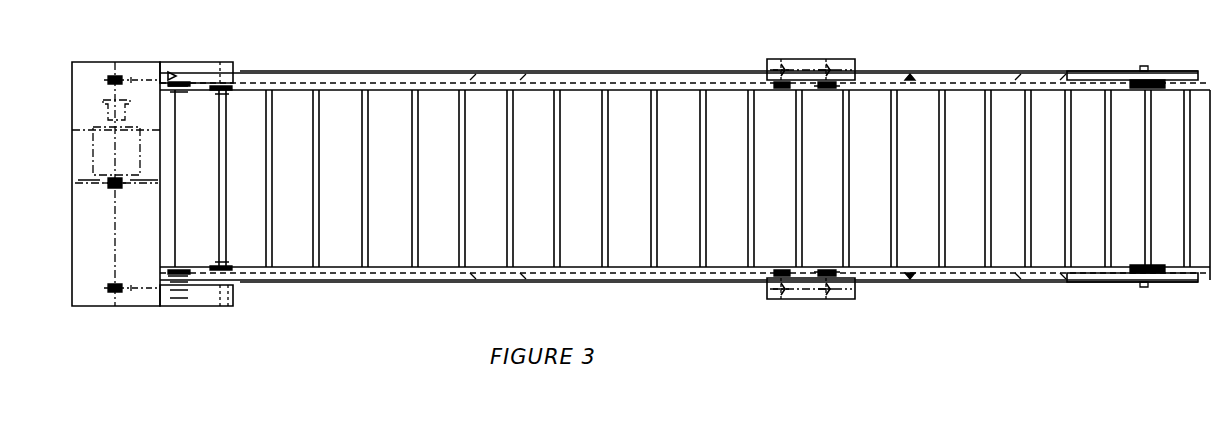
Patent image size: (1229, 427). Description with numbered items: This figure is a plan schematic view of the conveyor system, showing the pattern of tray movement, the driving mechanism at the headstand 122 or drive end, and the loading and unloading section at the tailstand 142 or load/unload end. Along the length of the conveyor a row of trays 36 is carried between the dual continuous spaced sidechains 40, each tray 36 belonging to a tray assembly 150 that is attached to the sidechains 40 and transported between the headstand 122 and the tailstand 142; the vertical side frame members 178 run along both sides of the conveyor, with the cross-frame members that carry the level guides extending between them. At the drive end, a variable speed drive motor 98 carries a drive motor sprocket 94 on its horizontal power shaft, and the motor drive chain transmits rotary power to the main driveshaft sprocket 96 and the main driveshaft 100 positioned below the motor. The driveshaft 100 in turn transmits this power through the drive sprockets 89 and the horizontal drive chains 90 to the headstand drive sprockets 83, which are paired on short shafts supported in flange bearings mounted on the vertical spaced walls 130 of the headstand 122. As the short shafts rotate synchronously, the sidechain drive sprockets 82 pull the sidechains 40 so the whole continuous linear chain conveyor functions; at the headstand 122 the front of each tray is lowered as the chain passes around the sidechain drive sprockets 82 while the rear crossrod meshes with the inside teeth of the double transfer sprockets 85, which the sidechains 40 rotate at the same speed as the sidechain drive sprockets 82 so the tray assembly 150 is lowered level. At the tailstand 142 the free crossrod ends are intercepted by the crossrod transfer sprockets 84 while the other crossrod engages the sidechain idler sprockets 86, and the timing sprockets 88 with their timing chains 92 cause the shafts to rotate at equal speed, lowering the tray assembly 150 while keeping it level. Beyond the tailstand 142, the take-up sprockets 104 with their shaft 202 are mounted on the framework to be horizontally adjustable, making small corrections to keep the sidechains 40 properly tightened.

The tray 36 is at (161, 175).
The dual continuous spaced sidechains 40 is at (426, 75).
The sidechain drive sprockets 82 is at (178, 93).
The headstand drive sprockets 83 is at (186, 72).
The crossrod transfer sprockets 84 is at (828, 90).
The double transfer sprockets 85 is at (214, 90).
The sidechain idler sprockets 86 is at (780, 90).
The timing sprockets 88 is at (780, 64).
The drive sprockets 89 is at (110, 72).
The horizontal drive chains 90 is at (131, 76).
The timing chains 92 is at (800, 70).
The drive motor sprocket 94 is at (122, 192).
The main driveshaft sprocket 96 is at (88, 186).
The variable speed drive motor 98 is at (93, 157).
The main driveshaft 100 is at (110, 246).
The take-up sprockets 104 is at (1130, 78).
The headstand 122 is at (198, 302).
The vertical spaced walls 130 is at (218, 304).
The tailstand 142 is at (812, 300).
The tray assembly 150 is at (916, 74).
The vertical side frame members 178 is at (505, 74).
The shaft 202 is at (1142, 66).